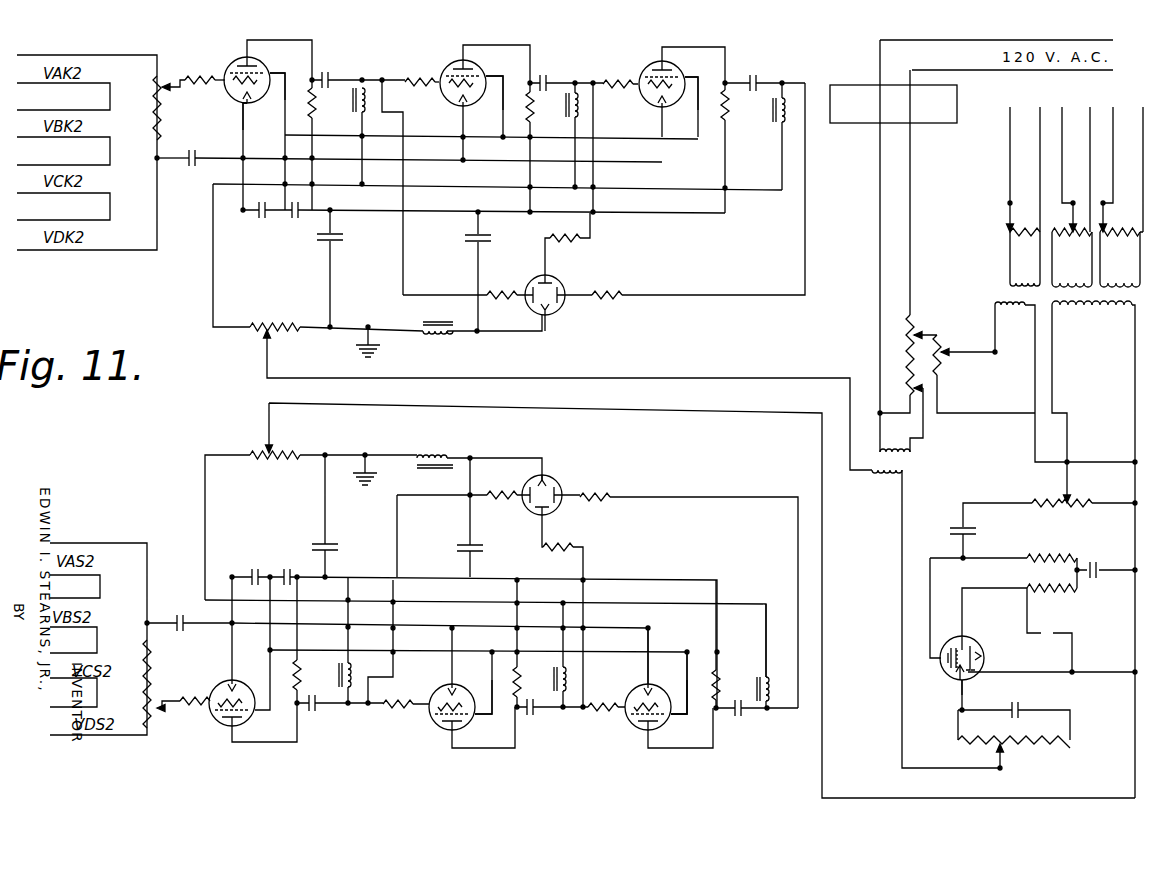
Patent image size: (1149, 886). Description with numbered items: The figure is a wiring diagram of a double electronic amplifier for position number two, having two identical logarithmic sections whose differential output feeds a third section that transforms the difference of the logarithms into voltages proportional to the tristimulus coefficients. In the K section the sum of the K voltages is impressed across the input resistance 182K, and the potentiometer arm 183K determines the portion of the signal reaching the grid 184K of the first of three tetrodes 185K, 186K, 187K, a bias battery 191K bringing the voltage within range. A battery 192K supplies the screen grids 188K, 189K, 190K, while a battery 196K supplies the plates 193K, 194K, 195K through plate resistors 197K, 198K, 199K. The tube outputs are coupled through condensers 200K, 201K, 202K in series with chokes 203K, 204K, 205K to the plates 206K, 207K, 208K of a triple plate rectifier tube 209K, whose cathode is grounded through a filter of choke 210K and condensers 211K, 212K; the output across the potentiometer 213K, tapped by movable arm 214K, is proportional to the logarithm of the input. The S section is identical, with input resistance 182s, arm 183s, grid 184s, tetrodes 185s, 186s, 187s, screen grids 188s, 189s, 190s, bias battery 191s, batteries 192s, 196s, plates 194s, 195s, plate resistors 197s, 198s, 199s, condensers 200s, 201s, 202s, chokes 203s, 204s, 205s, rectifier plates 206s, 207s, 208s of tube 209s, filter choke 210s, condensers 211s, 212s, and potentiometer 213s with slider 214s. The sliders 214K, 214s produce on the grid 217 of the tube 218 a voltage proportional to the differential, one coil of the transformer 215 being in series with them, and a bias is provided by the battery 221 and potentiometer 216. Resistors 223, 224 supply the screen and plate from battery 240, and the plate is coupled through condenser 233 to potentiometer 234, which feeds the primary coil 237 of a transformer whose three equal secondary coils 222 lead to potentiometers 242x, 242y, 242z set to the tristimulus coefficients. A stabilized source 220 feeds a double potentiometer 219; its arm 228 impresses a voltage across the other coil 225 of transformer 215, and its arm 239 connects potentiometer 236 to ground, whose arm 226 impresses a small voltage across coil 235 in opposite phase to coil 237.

The input resistance 182K is at (166, 116).
The potentiometer arm 183K is at (170, 84).
The grid 184K is at (245, 103).
The tetrode 185K is at (240, 58).
The tetrode 186K is at (455, 60).
The tetrode 187K is at (648, 60).
The screen grid 188K is at (222, 78).
The screen grid 189K is at (438, 78).
The screen grid 190K is at (687, 76).
The bias battery 191K is at (194, 155).
The battery 192K is at (262, 216).
The plate 193K is at (268, 73).
The plate 194K is at (486, 72).
The plate 195K is at (636, 72).
The battery 196K is at (294, 217).
The plate resistor 197K is at (316, 112).
The plate resistor 198K is at (535, 125).
The plate resistor 199K is at (728, 112).
The condenser 200K is at (328, 74).
The condenser 201K is at (550, 74).
The condenser 202K is at (756, 72).
The choke 203K is at (365, 102).
The choke 204K is at (580, 110).
The choke 205K is at (802, 120).
The plate 206K is at (530, 284).
The plate 207K is at (556, 276).
The plate 208K is at (570, 290).
The triple plate rectifier tube 209K is at (552, 316).
The choke 210K is at (440, 320).
The condenser 211K is at (468, 242).
The condenser 212K is at (336, 242).
The potentiometer 213K is at (277, 324).
The movable arm 214K is at (267, 378).
The input resistance 182s is at (152, 672).
The potentiometer arm 183s is at (156, 712).
The grid 184s is at (195, 712).
The tetrode 185s is at (210, 691).
The tetrode 186s is at (435, 730).
The tetrode 187s is at (632, 735).
The screen grid 188s is at (242, 710).
The screen grid 189s is at (400, 706).
The screen grid 190s is at (673, 717).
The bias battery 191s is at (178, 617).
The battery 192s is at (253, 570).
The plate 194s is at (462, 724).
The plate 195s is at (647, 740).
The battery 196s is at (286, 569).
The plate resistor 197s is at (306, 664).
The plate resistor 198s is at (520, 710).
The plate resistor 199s is at (728, 668).
The condenser 200s is at (315, 708).
The condenser 201s is at (526, 733).
The condenser 202s is at (740, 714).
The choke 203s is at (352, 680).
The choke 204s is at (567, 681).
The choke 205s is at (770, 690).
The plate 206s is at (524, 502).
The plate 207s is at (556, 518).
The plate 208s is at (565, 488).
The triple plate rectifier tube 209s is at (548, 478).
The choke 210s is at (429, 455).
The condenser 211s is at (461, 546).
The condenser 212s is at (330, 547).
The potentiometer 213s is at (280, 457).
The movable arm 214s is at (269, 426).
The transformer 215 is at (902, 470).
The potentiometer 216 is at (1045, 748).
The grid 217 is at (970, 678).
The tube 218 is at (968, 650).
The double potentiometer 219 is at (914, 310).
The source 220 is at (830, 85).
The bias battery 221 is at (1025, 708).
The secondary coils 222 is at (1071, 257).
The resistor 223 is at (1060, 596).
The resistor 224 is at (1050, 555).
The coil 225 is at (910, 452).
The sliding arm 226 is at (980, 362).
The sliding arm 228 is at (930, 386).
The condenser 233 is at (972, 530).
The potentiometer 234 is at (1038, 500).
The coil 235 is at (1011, 317).
The potentiometer 236 is at (945, 335).
The coil 237 is at (1115, 310).
The sliding arm 239 is at (920, 312).
The battery 240 is at (1097, 563).
The potentiometer 242z is at (1010, 205).
The potentiometer 242y is at (1073, 228).
The potentiometer 242x is at (1100, 230).